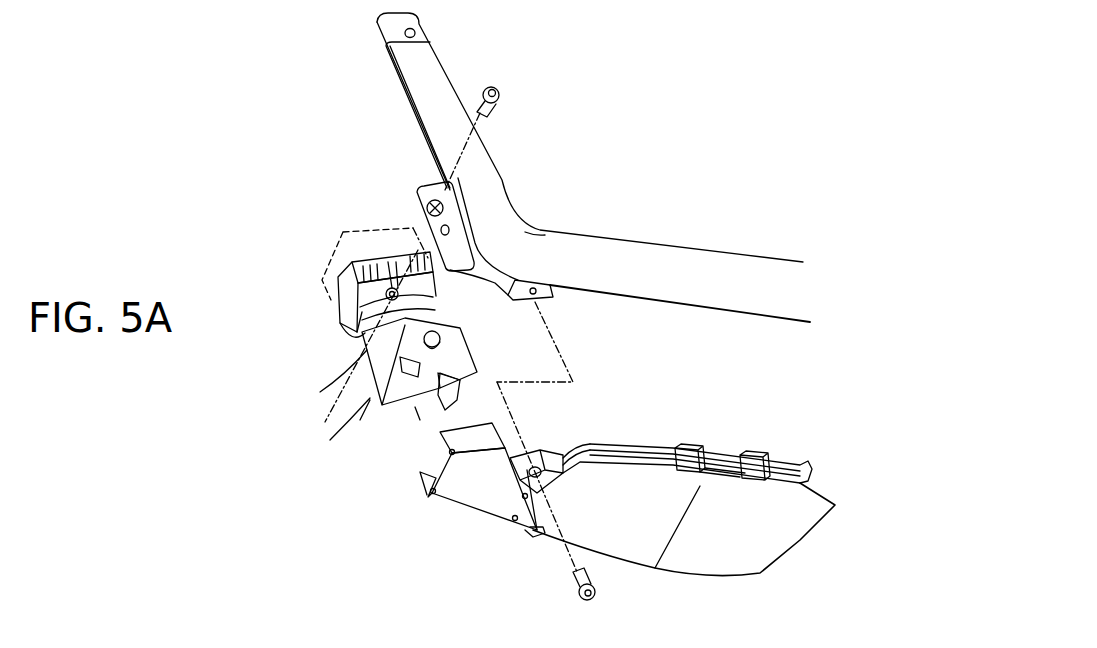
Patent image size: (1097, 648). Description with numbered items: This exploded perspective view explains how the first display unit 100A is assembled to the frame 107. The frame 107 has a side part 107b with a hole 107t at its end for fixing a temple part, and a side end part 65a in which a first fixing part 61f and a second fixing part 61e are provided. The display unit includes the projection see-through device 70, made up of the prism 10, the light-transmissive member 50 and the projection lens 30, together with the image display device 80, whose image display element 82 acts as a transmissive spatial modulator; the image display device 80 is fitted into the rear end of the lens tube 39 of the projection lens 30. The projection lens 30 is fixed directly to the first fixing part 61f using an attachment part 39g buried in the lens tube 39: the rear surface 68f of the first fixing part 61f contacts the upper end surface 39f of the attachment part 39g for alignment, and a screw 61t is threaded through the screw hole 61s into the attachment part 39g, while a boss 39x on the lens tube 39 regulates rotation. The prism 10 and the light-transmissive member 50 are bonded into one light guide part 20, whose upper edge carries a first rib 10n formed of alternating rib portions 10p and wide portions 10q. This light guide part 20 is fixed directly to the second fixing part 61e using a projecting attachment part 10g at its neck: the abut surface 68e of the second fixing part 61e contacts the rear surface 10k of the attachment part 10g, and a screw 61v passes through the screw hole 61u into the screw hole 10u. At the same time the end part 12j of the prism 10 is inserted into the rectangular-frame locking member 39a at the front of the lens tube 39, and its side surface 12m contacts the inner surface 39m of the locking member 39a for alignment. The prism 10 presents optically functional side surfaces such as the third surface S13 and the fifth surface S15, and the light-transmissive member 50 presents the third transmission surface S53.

The frame 107 is at (652, 265).
The side part 107b is at (430, 87).
The hole 107t is at (405, 35).
The side end part 65a is at (532, 240).
The screw hole 61u is at (543, 280).
The first fixing part 61f is at (418, 196).
The rear surface 68f is at (425, 207).
The screw hole 61s is at (455, 196).
The screw 61t is at (498, 97).
The second fixing part 61e is at (550, 293).
The abut surface 68e is at (540, 295).
The first display unit 100A is at (762, 150).
The image display element 82 is at (318, 302).
The image display device 80 is at (300, 265).
The projection lens 30 is at (398, 348).
The lens tube 39 is at (437, 316).
The upper end surface 39f is at (385, 292).
The attachment part 39g is at (358, 340).
The boss 39x is at (442, 340).
The inner surface 39m is at (417, 400).
The locking member 39a is at (380, 400).
The projection see-through device 70 is at (370, 483).
The end part 12j is at (422, 477).
The fifth surface S15 is at (472, 495).
The side surface 12m is at (468, 447).
The rear surface 10k is at (529, 455).
The attachment part 10g is at (540, 453).
The screw hole 10u is at (525, 502).
The screw 61v is at (573, 590).
The prism 10 is at (612, 473).
The light guide part 20 is at (645, 430).
The rib portion 10p is at (660, 450).
The wide portion 10q is at (687, 453).
The first rib 10n is at (760, 400).
The light-transmissive member 50 is at (753, 533).
The third surface S13 is at (630, 538).
The third transmission surface S53 is at (713, 553).